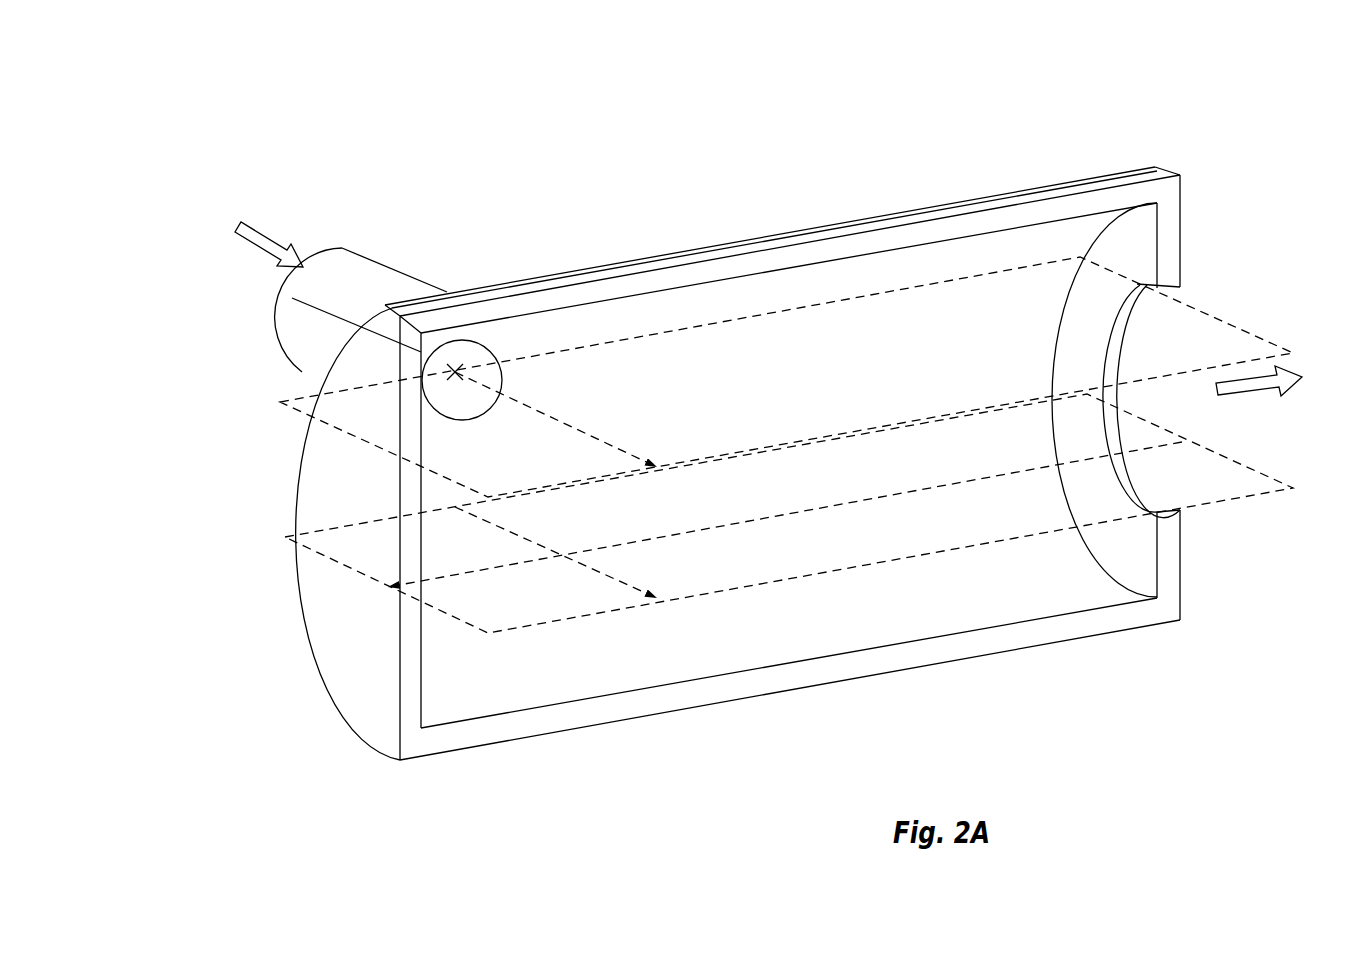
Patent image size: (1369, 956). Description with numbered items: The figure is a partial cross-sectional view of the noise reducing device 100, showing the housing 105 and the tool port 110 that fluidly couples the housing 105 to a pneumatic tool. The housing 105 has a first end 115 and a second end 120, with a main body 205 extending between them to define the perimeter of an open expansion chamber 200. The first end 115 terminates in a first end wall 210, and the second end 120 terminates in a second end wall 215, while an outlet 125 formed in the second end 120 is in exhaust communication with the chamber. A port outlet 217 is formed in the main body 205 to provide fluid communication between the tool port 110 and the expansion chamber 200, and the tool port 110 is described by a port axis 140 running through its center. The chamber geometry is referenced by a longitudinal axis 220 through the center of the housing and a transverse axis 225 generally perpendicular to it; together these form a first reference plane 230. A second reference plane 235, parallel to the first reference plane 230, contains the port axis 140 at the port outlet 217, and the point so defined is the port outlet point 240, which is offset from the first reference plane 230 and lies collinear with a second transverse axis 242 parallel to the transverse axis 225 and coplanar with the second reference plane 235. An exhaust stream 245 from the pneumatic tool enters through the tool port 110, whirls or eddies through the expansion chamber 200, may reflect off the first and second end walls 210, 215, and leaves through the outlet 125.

The noise reducing device 100 is at (782, 421).
The housing 105 is at (838, 200).
The tool port 110 is at (388, 277).
The first end 115 is at (405, 770).
The second end 120 is at (1177, 630).
The outlet 125 is at (1182, 509).
The port axis 140 is at (363, 333).
The expansion chamber 200 is at (897, 601).
The main body 205 is at (693, 272).
The first end wall 210 is at (363, 509).
The second end wall 215 is at (1095, 347).
The port outlet 217 is at (463, 355).
The longitudinal axis 220 is at (667, 545).
The transverse axis 225 is at (598, 582).
The first reference plane 230 is at (773, 592).
The second reference plane 235 is at (634, 325).
The port outlet point 240 is at (445, 380).
The second transverse axis 242 is at (549, 405).
The exhaust stream 245 is at (270, 235).